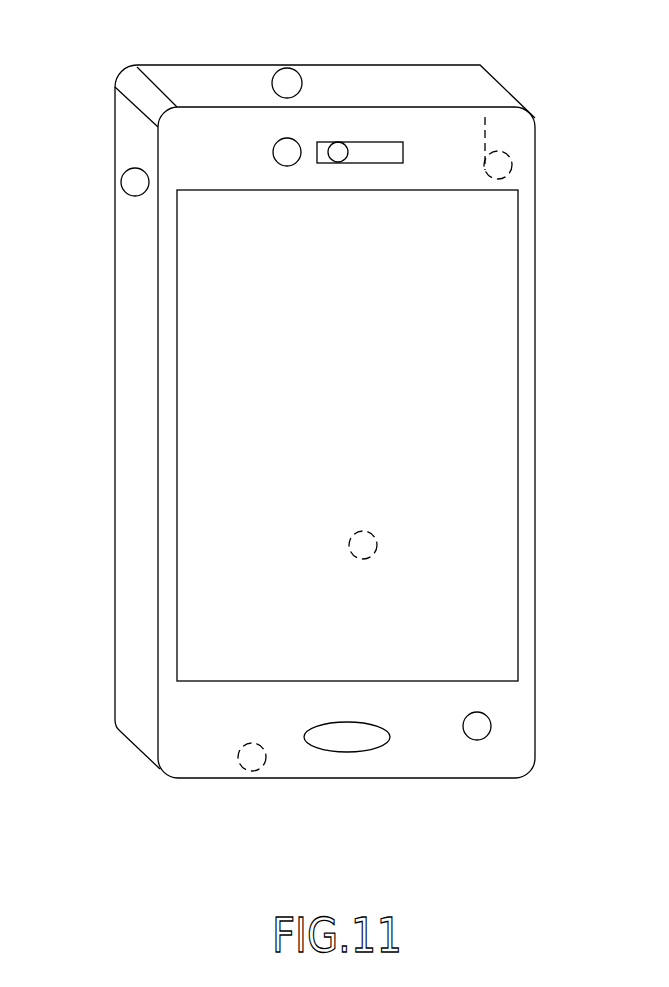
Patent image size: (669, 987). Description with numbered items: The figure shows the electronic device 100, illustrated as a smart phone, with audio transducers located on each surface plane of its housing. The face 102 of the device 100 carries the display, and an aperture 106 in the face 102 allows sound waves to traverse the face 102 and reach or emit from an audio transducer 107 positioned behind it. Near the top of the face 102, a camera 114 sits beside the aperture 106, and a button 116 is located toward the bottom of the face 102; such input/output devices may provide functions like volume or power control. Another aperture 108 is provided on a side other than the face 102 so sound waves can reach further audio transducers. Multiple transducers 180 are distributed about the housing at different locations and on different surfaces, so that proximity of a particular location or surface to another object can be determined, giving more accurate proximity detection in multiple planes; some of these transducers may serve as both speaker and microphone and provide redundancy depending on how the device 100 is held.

The electronic device 100 is at (559, 91).
The face 102 is at (526, 132).
The aperture 106 is at (403, 143).
The audio transducer 107 is at (338, 142).
The aperture 108 is at (252, 771).
The camera 114 is at (273, 151).
The button 116 is at (378, 728).
The transducers 180 is at (289, 69).